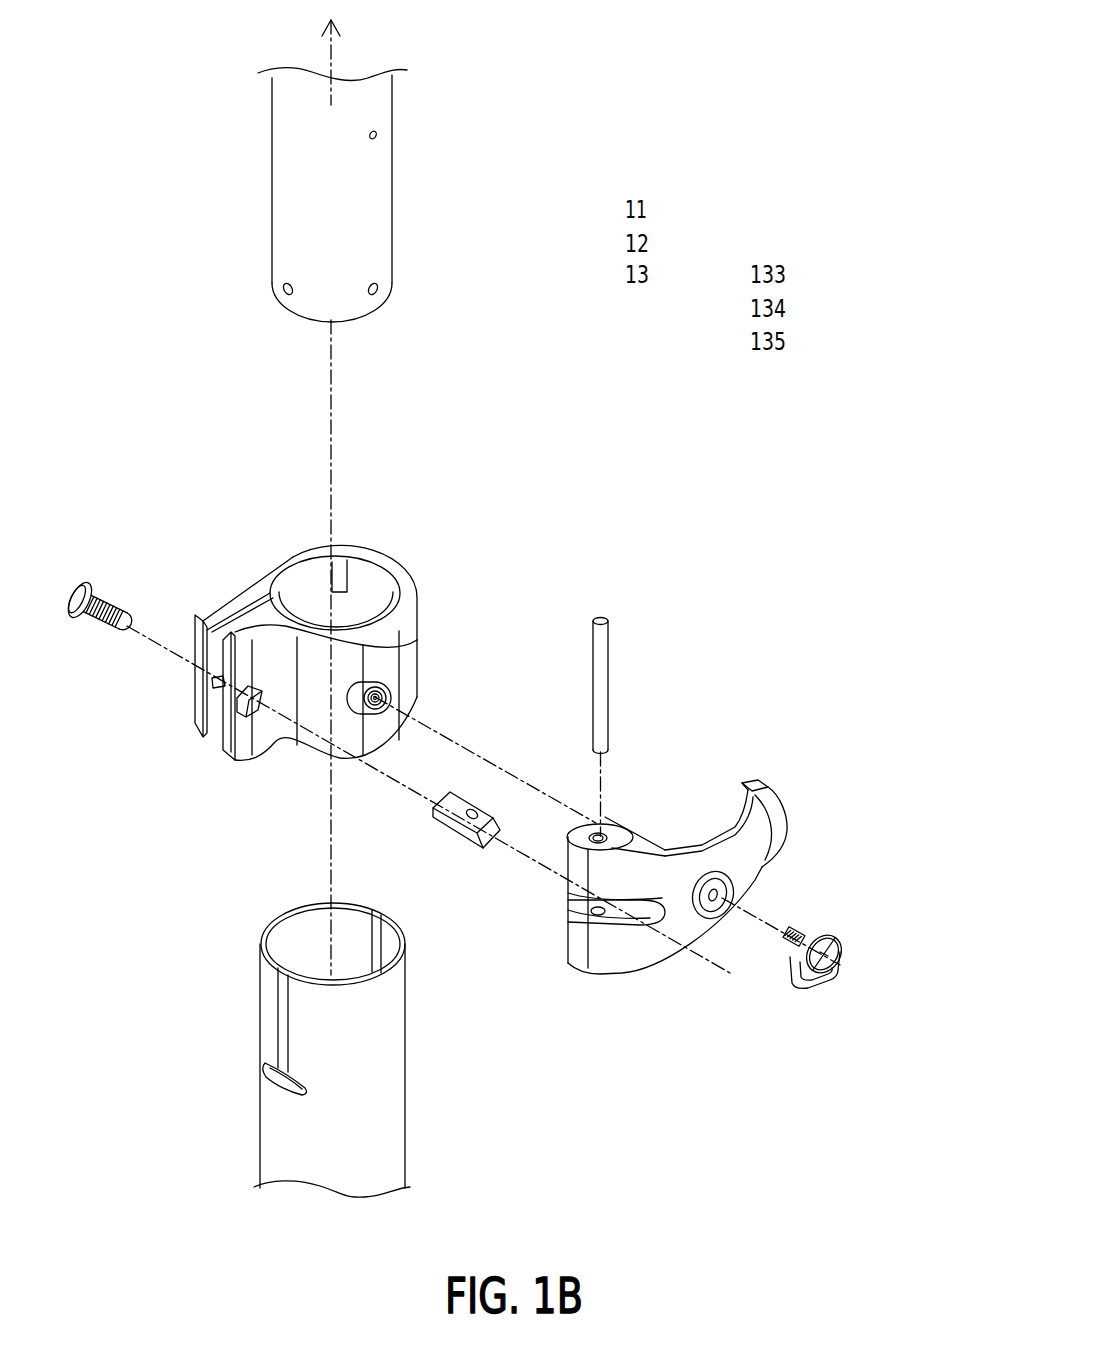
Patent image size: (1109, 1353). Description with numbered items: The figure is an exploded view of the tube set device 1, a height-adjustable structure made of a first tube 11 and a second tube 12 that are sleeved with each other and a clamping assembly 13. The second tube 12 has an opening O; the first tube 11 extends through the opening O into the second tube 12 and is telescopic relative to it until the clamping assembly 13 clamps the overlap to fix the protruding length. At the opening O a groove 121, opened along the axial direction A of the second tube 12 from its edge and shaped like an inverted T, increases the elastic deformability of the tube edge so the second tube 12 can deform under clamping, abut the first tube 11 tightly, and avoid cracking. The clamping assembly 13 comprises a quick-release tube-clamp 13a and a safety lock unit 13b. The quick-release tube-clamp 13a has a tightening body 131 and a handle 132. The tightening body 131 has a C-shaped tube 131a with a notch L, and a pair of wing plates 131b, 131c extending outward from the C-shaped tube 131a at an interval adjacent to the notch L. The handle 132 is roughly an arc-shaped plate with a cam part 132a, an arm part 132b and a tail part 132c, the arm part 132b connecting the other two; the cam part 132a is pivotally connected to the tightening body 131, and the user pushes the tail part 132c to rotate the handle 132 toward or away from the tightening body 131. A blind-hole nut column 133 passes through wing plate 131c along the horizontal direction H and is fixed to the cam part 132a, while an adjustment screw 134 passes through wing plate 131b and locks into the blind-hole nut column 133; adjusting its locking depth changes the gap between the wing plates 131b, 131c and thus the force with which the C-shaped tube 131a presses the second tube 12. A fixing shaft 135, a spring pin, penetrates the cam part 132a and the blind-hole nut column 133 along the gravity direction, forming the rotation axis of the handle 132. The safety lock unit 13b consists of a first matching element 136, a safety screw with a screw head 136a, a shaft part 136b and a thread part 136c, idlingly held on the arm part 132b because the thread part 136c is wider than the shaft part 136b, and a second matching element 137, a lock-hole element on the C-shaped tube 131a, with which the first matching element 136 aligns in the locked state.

The tube set device 1 is at (625, 185).
The first tube 11 is at (377, 203).
The second tube 12 is at (328, 1043).
The groove 121 is at (287, 995).
The clamping assembly 13 is at (753, 185).
The quick-release tube-clamp 13a is at (766, 210).
The safety lock unit 13b is at (767, 244).
The tightening body 131 is at (338, 651).
The C-shaped tube 131a is at (302, 548).
The wing plate 131b is at (232, 603).
The wing plate 131c is at (265, 735).
The handle 132 is at (683, 826).
The cam part 132a is at (626, 840).
The arm part 132b is at (713, 845).
The tail part 132c is at (767, 800).
The blind-hole nut column 133 is at (458, 838).
The adjustment screw 134 is at (108, 596).
The fixing shaft 135 is at (597, 645).
The first matching element 136 is at (884, 892).
The screw head 136a is at (819, 932).
The shaft part 136b is at (803, 934).
The thread part 136c is at (790, 930).
The second matching element 137 is at (390, 697).
The axial direction A is at (331, 487).
The notch L is at (213, 752).
The horizontal direction H is at (607, 845).
The opening O is at (296, 938).